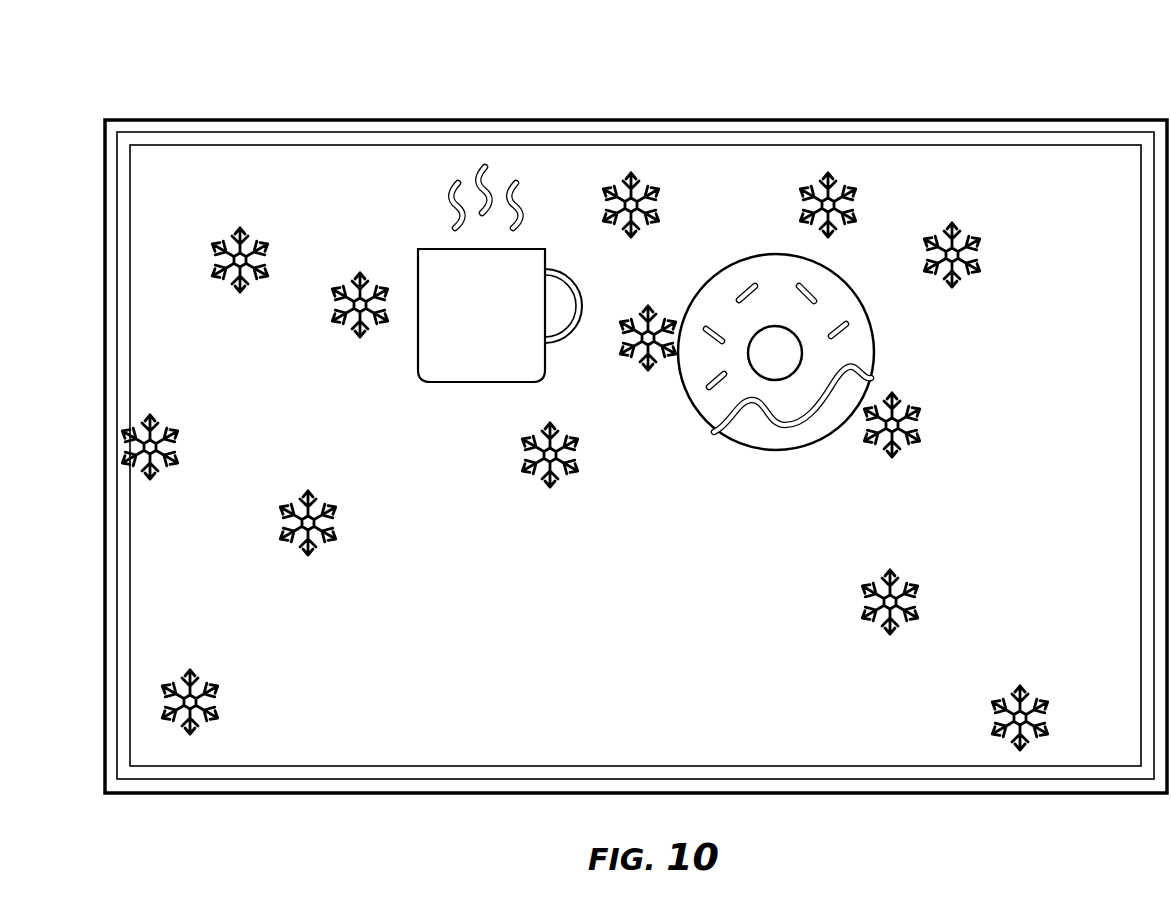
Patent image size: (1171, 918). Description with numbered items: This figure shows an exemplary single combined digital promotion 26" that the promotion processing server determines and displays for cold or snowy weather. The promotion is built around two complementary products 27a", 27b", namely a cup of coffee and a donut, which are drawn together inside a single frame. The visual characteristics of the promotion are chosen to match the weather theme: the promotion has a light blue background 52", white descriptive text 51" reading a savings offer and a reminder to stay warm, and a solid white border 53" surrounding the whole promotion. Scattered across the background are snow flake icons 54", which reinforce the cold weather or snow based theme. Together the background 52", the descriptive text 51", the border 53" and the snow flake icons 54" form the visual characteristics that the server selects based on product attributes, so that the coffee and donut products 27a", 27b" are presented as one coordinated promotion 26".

The single combined digital promotion 26 is at (198, 58).
The complementary product 27a is at (535, 249).
The complementary product 27b is at (759, 253).
The descriptive text 51 is at (540, 657).
The background 52 is at (165, 325).
The border 53 is at (122, 397).
The snow flake icons 54 is at (212, 262).